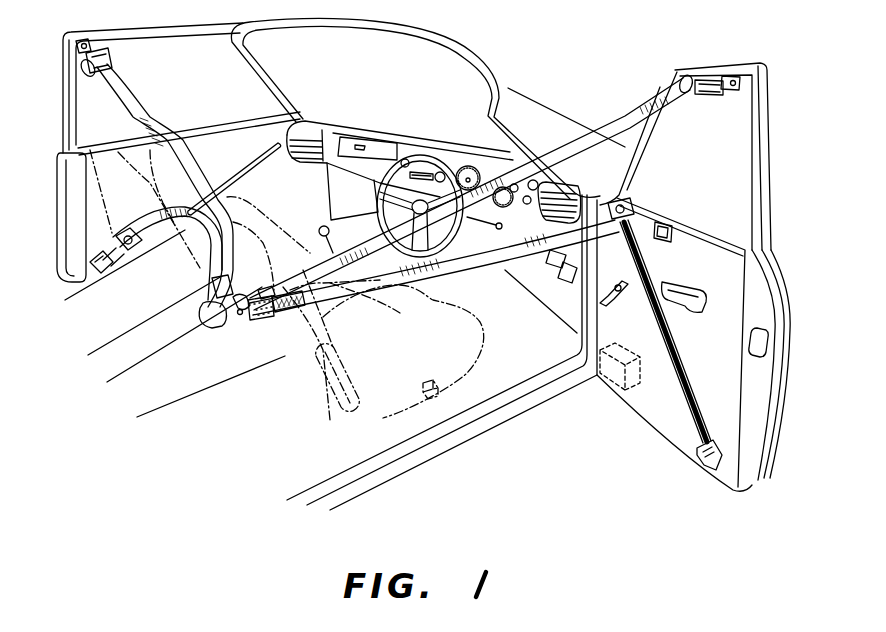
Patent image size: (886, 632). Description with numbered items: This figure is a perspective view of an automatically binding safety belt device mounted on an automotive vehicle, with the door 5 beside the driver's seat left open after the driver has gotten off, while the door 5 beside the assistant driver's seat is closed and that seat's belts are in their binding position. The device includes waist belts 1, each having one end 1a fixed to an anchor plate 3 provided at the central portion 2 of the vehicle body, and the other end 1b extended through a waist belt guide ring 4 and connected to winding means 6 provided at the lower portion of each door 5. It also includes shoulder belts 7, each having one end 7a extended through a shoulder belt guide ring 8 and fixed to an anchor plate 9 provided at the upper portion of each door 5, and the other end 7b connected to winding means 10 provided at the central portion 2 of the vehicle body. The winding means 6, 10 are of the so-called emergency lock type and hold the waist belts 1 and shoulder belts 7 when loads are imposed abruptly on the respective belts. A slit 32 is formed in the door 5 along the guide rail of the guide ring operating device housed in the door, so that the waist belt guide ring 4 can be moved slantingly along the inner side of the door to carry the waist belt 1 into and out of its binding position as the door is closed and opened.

The waist belt 1 is at (164, 212).
The one end of waist belt 1a is at (281, 314).
The other end of waist belt 1b is at (123, 268).
The central portion of the vehicle body 2 is at (153, 340).
The anchor plate 3 is at (253, 320).
The waist belt guide ring 4 is at (119, 233).
The door 5 is at (70, 128).
The winding means 6 is at (103, 272).
The shoulder belt 7 is at (157, 128).
The one end of shoulder belt 7a is at (100, 53).
The other end of shoulder belt 7b is at (214, 288).
The shoulder belt guide ring 8 is at (107, 60).
The anchor plate 9 is at (82, 58).
The winding means 10 is at (238, 294).
The slit 32 is at (232, 175).